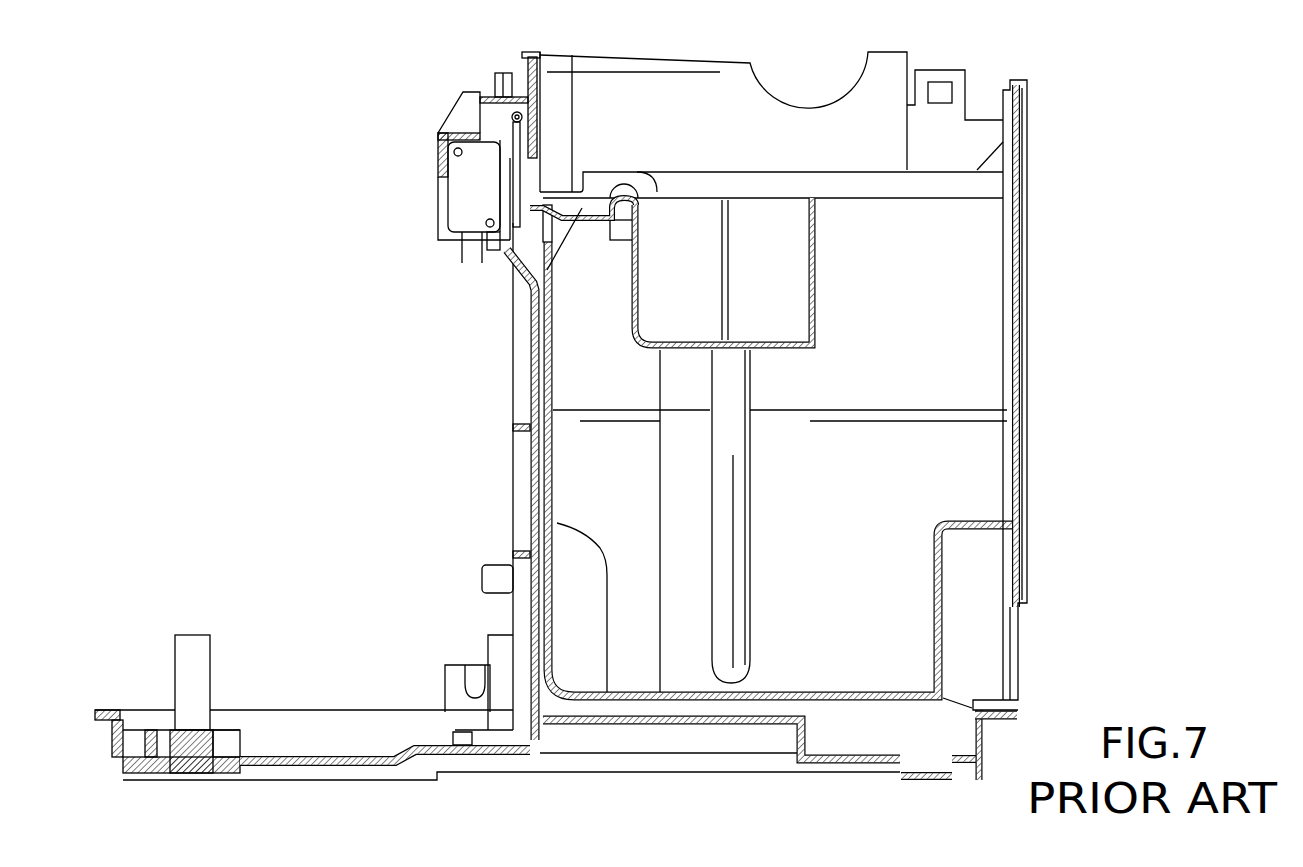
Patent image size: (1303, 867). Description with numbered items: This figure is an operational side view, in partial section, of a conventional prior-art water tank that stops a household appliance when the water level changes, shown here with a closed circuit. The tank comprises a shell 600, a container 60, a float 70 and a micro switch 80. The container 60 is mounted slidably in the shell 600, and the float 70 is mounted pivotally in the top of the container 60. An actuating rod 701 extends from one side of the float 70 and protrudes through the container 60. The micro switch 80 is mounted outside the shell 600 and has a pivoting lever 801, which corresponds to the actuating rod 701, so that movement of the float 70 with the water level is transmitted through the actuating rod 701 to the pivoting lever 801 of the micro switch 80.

The container 60 is at (1020, 283).
The float 70 is at (815, 228).
The micro switch 80 is at (488, 122).
The shell 600 is at (535, 443).
The actuating rod 701 is at (582, 220).
The pivoting lever 801 is at (517, 150).